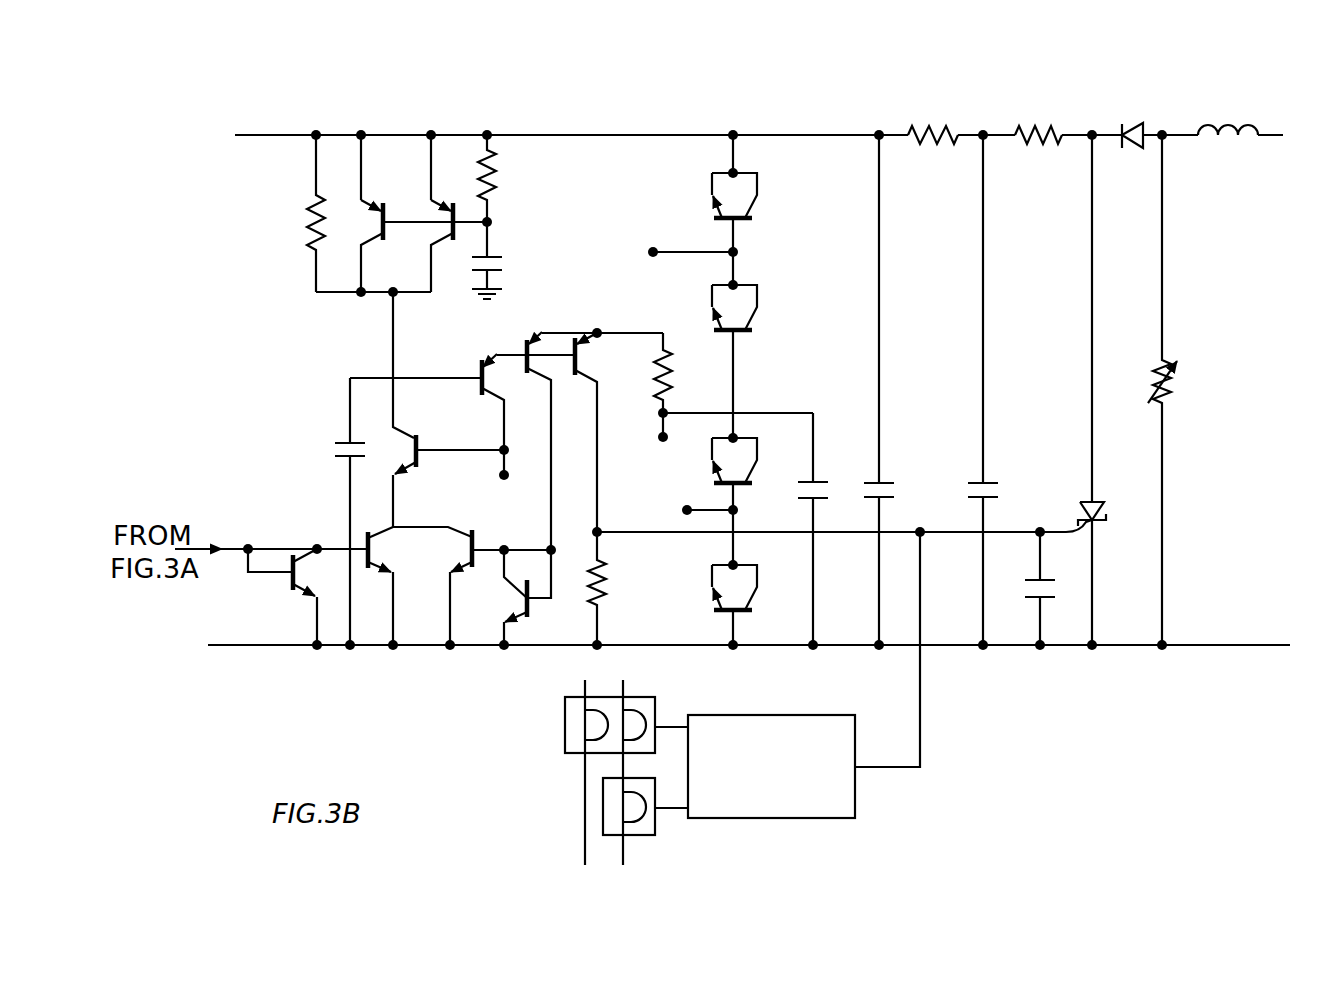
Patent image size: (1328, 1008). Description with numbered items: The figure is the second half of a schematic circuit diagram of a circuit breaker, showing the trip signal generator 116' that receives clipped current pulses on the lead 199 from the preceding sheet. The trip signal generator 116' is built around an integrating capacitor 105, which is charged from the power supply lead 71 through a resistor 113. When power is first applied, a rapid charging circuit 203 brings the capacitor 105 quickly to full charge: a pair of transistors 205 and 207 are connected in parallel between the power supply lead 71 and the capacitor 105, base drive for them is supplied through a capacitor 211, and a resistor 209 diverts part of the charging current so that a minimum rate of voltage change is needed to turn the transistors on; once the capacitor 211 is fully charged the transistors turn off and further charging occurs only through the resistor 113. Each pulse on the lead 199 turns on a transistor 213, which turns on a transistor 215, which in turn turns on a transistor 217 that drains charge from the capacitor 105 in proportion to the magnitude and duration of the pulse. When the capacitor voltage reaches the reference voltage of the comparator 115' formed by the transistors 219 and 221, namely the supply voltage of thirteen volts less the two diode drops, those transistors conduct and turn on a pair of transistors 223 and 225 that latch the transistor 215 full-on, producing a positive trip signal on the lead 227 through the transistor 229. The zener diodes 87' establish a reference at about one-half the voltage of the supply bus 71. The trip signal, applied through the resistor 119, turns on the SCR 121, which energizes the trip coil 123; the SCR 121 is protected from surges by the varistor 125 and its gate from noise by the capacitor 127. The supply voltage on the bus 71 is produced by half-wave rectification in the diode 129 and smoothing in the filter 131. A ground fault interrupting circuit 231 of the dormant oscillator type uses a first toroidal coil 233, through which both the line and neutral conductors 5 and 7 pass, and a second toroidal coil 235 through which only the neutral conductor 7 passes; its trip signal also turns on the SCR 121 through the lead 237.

The power supply lead 71 is at (622, 135).
The resistor 113 is at (305, 228).
The transistor 205 is at (386, 208).
The transistor 207 is at (449, 232).
The resistor 209 is at (498, 178).
The rapid charging circuit 203 is at (519, 222).
The capacitor 211 is at (503, 264).
The comparator 115' is at (580, 411).
The trip signal generator 116' is at (446, 409).
The integrating capacitor 105 is at (336, 450).
The transistor 217 is at (424, 452).
The transistor 219 is at (492, 392).
The transistor 221 is at (525, 366).
The transistor 229 is at (588, 352).
The lead 199 is at (222, 548).
The transistor 213 is at (293, 583).
The transistor 215 is at (366, 536).
The transistor 225 is at (470, 533).
The transistor 223 is at (527, 600).
The resistor 119 is at (608, 591).
The lead 227 is at (700, 534).
The zener diodes 87' is at (717, 390).
The filter 131 is at (1036, 147).
The diode 129 is at (1124, 127).
The trip coil 123 is at (1220, 122).
The varistor 125 is at (1172, 386).
The SCR 121 is at (1100, 505).
The capacitor 127 is at (1024, 586).
The lead 237 is at (923, 740).
The first coil 233 is at (656, 700).
The ground fault interrupting circuit 231 is at (750, 715).
The second coil 235 is at (658, 816).
The line conductor 5 is at (583, 848).
The neutral conductor 7 is at (626, 848).